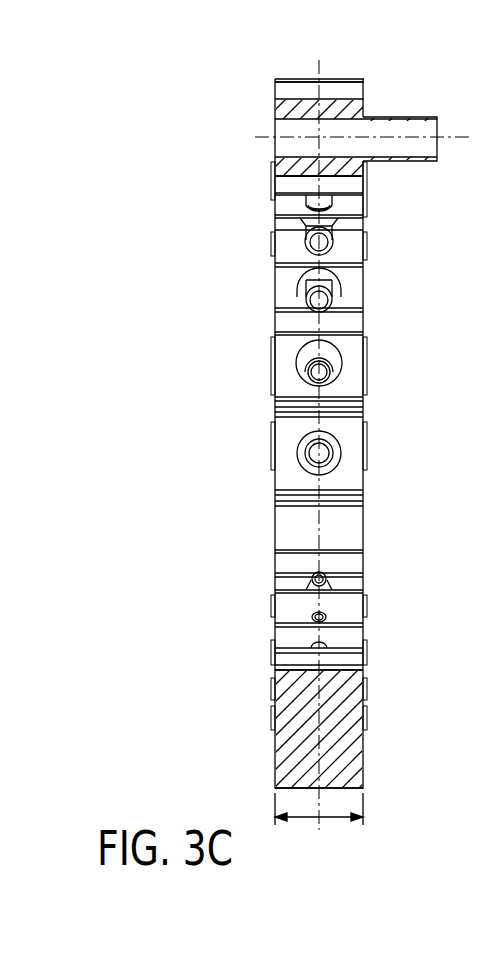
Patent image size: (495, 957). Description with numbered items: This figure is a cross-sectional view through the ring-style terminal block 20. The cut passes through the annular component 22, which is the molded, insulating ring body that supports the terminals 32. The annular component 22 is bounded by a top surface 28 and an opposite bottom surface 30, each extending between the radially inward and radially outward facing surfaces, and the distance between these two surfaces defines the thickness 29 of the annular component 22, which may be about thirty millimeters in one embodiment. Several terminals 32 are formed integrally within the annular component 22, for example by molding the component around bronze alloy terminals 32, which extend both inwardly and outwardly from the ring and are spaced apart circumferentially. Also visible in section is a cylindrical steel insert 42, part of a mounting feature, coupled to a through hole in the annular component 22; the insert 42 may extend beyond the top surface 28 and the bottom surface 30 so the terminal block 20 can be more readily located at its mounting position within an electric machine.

The terminal block 20 is at (327, 463).
The annular component 22 is at (275, 745).
The top surface 28 is at (275, 89).
The thickness 29 is at (321, 822).
The bottom surface 30 is at (364, 90).
The terminals 32 is at (333, 243).
The cylindrical steel insert 42 is at (421, 117).